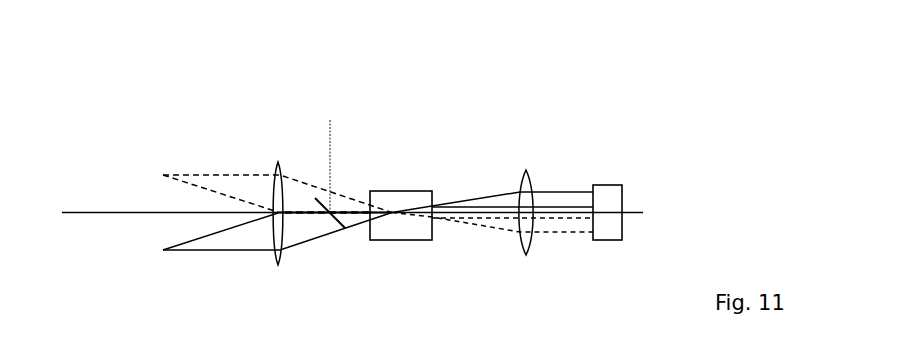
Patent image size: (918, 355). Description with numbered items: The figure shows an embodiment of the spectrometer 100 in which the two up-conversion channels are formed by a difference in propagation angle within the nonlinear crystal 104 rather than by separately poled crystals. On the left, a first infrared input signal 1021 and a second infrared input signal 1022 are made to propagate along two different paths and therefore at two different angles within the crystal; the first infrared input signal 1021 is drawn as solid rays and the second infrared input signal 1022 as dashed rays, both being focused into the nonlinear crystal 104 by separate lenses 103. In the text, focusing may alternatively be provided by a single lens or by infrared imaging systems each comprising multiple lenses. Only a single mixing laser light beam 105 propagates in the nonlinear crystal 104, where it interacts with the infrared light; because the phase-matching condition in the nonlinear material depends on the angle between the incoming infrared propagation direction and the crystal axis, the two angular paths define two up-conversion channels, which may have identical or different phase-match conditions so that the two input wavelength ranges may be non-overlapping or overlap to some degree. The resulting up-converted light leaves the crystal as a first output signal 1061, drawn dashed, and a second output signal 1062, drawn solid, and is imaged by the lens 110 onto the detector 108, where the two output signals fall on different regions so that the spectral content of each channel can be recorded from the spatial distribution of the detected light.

The spectrometer 100 is at (667, 60).
The first infrared input signal 1021 is at (277, 254).
The second infrared input signal 1022 is at (277, 177).
The infrared lens 103 is at (260, 197).
The mixing laser light beam 105 is at (342, 161).
The nonlinear crystal 104 is at (401, 188).
The lens 110 is at (537, 185).
The second output signal 1062 is at (496, 183).
The first output signal 1061 is at (492, 248).
The detector 108 is at (613, 188).